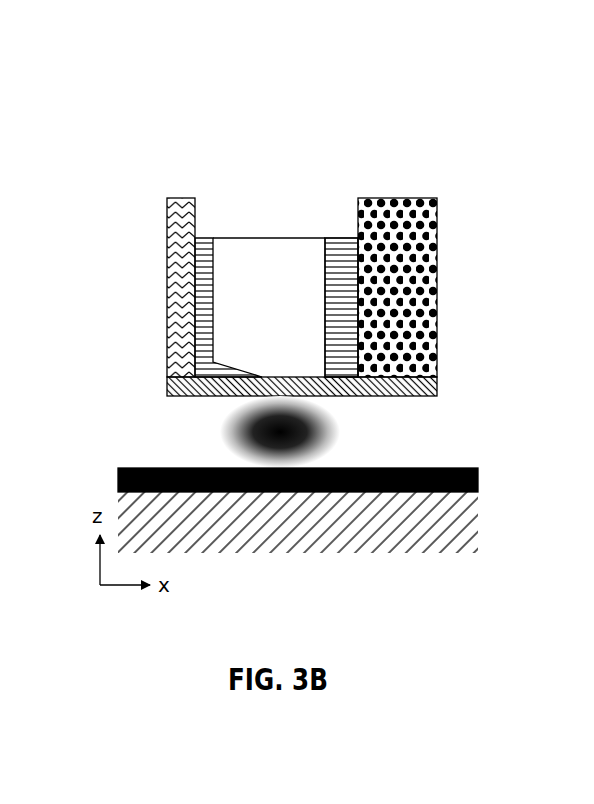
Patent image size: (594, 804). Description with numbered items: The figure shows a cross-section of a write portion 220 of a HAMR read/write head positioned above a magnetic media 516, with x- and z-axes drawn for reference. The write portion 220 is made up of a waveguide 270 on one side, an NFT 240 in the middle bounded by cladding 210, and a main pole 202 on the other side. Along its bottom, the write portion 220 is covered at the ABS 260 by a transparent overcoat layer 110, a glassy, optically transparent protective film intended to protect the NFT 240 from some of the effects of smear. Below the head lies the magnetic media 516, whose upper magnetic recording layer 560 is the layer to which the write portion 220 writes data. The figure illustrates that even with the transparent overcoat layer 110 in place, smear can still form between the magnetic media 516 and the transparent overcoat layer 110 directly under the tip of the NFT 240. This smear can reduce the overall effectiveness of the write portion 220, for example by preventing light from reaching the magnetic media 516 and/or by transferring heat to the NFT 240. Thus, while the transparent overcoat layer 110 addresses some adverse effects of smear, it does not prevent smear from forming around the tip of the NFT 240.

The write portion 220 is at (292, 84).
The waveguide 270 is at (187, 198).
The NFT 240 is at (247, 238).
The cladding 210 is at (340, 237).
The main pole 202 is at (418, 198).
The transparent overcoat layer 110 is at (358, 397).
The ABS 260 is at (199, 412).
The magnetic recording layer 560 is at (446, 466).
The magnetic media 516 is at (344, 567).